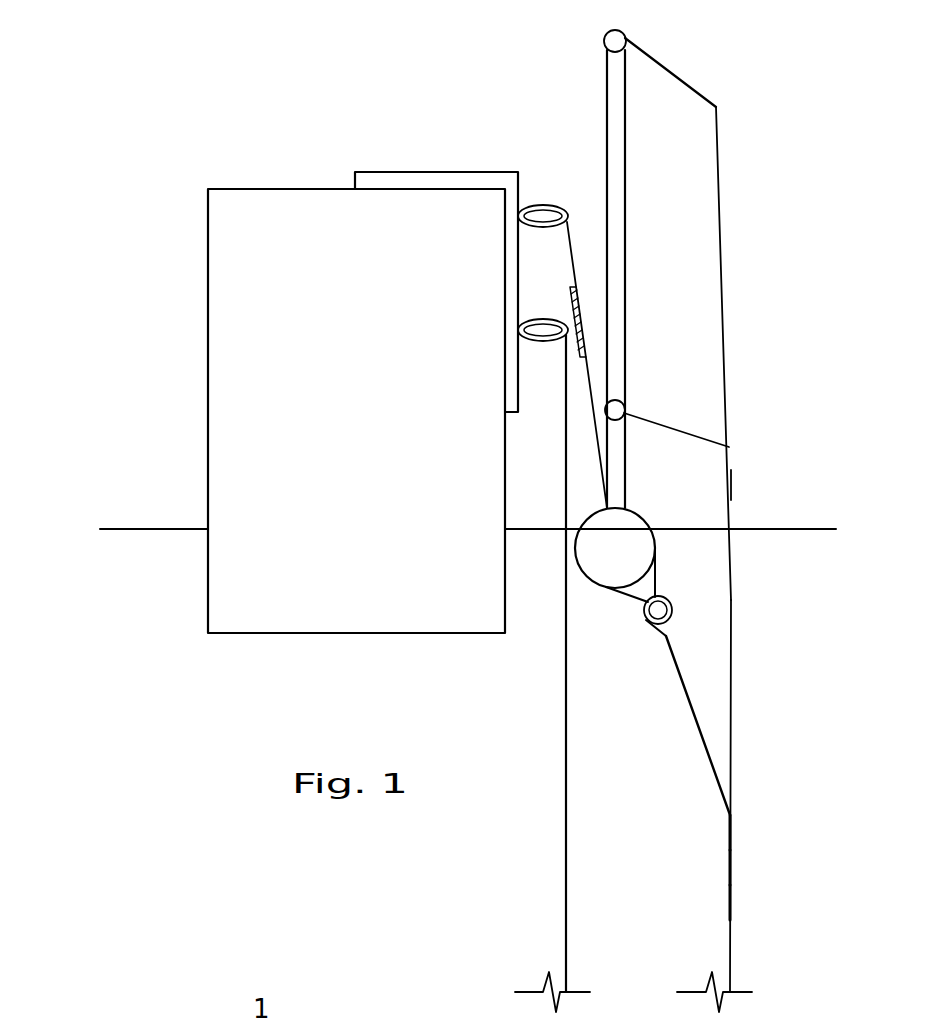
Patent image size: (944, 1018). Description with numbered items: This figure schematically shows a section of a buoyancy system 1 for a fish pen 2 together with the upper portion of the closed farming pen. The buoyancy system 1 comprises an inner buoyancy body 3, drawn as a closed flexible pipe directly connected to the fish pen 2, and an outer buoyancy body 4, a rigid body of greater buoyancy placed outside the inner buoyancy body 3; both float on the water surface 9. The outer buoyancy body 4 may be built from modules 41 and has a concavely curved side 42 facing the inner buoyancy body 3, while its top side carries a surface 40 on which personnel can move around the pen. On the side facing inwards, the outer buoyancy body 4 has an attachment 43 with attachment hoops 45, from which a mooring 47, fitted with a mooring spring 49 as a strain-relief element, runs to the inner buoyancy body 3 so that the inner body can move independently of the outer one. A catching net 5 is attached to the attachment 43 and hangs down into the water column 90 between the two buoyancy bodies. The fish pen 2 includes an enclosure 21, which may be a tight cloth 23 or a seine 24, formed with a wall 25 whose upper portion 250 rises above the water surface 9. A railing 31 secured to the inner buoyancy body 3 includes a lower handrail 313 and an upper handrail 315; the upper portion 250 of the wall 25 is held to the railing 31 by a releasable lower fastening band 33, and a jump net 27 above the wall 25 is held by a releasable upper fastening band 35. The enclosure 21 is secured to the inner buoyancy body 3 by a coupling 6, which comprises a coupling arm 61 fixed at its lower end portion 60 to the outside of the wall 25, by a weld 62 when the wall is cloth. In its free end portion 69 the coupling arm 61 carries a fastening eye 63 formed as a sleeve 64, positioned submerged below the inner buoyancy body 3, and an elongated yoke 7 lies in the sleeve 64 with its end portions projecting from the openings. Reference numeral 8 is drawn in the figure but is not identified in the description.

The buoyancy system 1 is at (383, 112).
The fish pen 2 is at (772, 685).
The inner buoyancy body 3 is at (617, 546).
The outer buoyancy body 4 is at (268, 230).
The catching net 5 is at (566, 910).
The coupling 6 is at (720, 700).
The yoke 7 is at (665, 610).
The link 8 is at (655, 573).
The water surface 9 is at (130, 529).
The enclosure 21 is at (730, 927).
The tight cloth 23 is at (730, 855).
The seine 24 is at (730, 868).
The wall 25 is at (730, 900).
The jump net 27 is at (722, 217).
The railing 31 is at (612, 160).
The lower fastening band 33 is at (700, 420).
The upper fastening band 35 is at (685, 80).
The surface 40 is at (236, 188).
The module 41 is at (262, 315).
The concavely curved side 42 is at (504, 620).
The attachment 43 is at (508, 282).
The attachment hoop 45 is at (556, 216).
The mooring 47 is at (568, 233).
The mooring spring 49 is at (587, 337).
The lower end portion 60 is at (726, 790).
The coupling arm 61 is at (703, 737).
The weld 62 is at (728, 818).
The fastening eye 63 is at (672, 598).
The sleeve 64 is at (668, 618).
The free end portion 69 is at (680, 667).
The water column 90 is at (670, 821).
The upper portion 250 is at (731, 485).
The lower handrail 313 is at (616, 408).
The upper handrail 315 is at (612, 40).